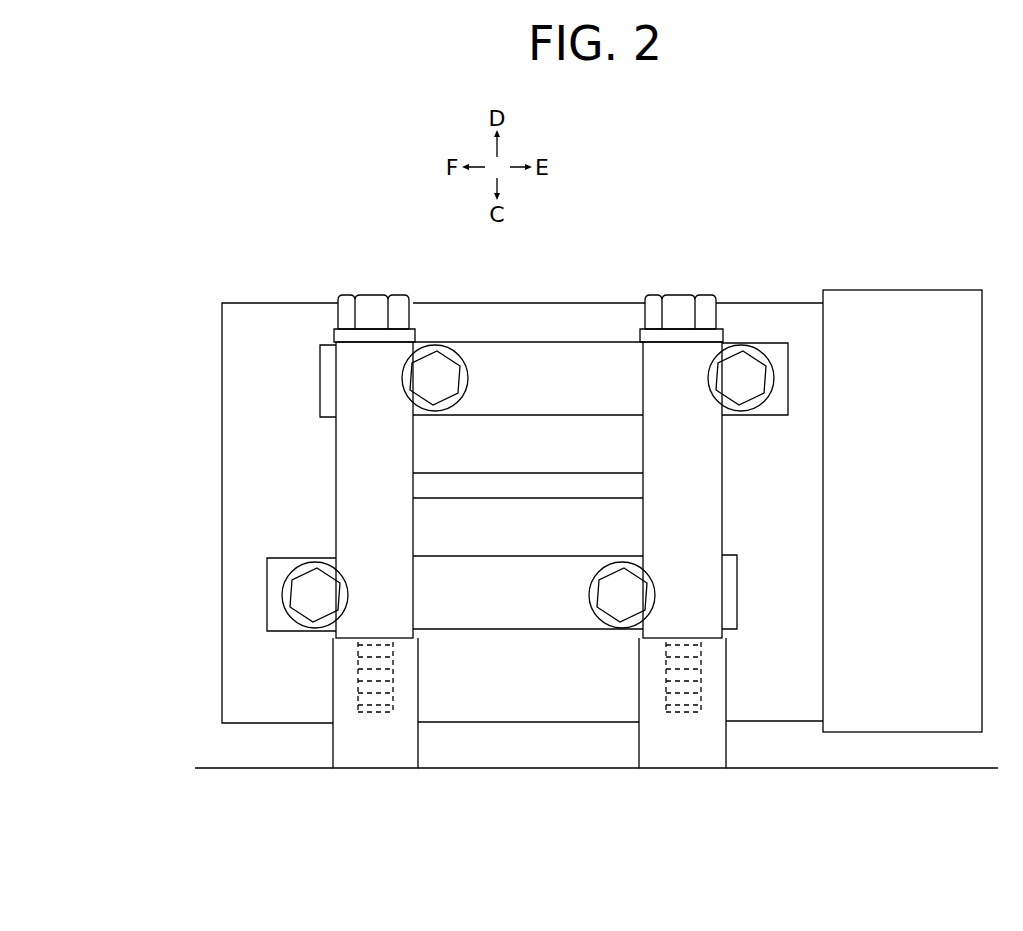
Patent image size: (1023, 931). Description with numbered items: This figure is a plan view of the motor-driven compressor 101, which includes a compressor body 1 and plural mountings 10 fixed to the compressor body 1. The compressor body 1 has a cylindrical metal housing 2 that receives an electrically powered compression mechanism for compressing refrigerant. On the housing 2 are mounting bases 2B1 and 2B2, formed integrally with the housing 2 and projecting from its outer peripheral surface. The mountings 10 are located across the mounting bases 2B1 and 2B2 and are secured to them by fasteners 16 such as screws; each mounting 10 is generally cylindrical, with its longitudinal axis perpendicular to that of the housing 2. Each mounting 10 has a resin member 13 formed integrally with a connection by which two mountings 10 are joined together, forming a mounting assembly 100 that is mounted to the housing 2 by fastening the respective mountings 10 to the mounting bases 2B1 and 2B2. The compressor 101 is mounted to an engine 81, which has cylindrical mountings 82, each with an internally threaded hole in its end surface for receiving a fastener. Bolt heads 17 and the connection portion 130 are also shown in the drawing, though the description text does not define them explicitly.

The compressor body 1 is at (851, 284).
The housing 2 is at (800, 303).
The mounting 10 is at (331, 480).
The resin member 13 is at (385, 533).
The fastener 16 is at (441, 352).
The fastening bolt 17 is at (380, 295).
The engine 81 is at (197, 766).
The mounting 82 is at (333, 750).
The mounting assembly 100 is at (792, 340).
The motor-driven compressor 101 is at (218, 266).
The intermediate plate 130 is at (538, 470).
The mounting base 2B1 is at (267, 580).
The mounting base 2B2 is at (320, 369).